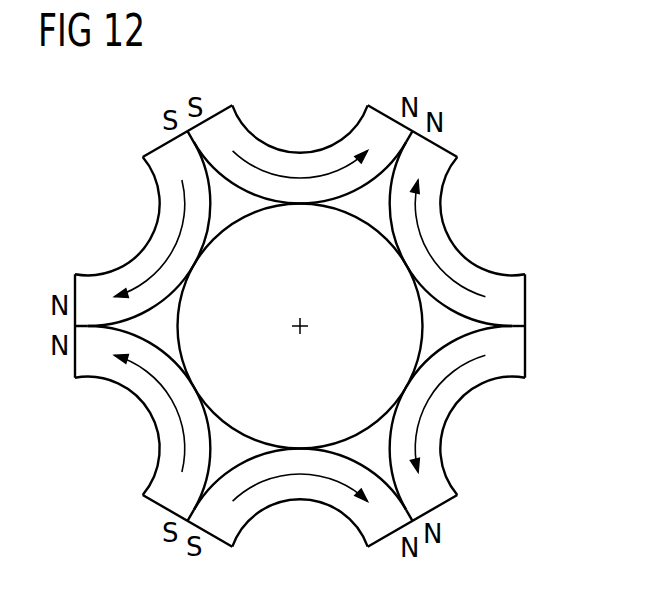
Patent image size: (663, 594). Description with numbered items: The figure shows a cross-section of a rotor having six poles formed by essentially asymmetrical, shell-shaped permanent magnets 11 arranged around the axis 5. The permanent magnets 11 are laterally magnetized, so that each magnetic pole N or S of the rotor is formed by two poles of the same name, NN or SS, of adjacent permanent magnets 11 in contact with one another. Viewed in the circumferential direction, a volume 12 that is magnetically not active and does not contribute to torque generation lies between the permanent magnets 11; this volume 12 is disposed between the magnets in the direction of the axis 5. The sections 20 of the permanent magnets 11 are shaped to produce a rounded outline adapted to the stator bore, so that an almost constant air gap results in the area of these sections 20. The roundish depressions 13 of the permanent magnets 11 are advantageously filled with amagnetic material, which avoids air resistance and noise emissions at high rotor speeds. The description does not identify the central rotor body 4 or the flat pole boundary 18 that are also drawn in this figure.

The rotor core 4 is at (207, 355).
The axis of rotation 5 is at (297, 331).
The magnetization direction 11 is at (428, 208).
The gap between magnet and rotor core 12 is at (381, 200).
The permanent magnet segment 13 is at (475, 225).
The pole boundary 18 is at (520, 285).
The magnet end face 20 is at (525, 300).